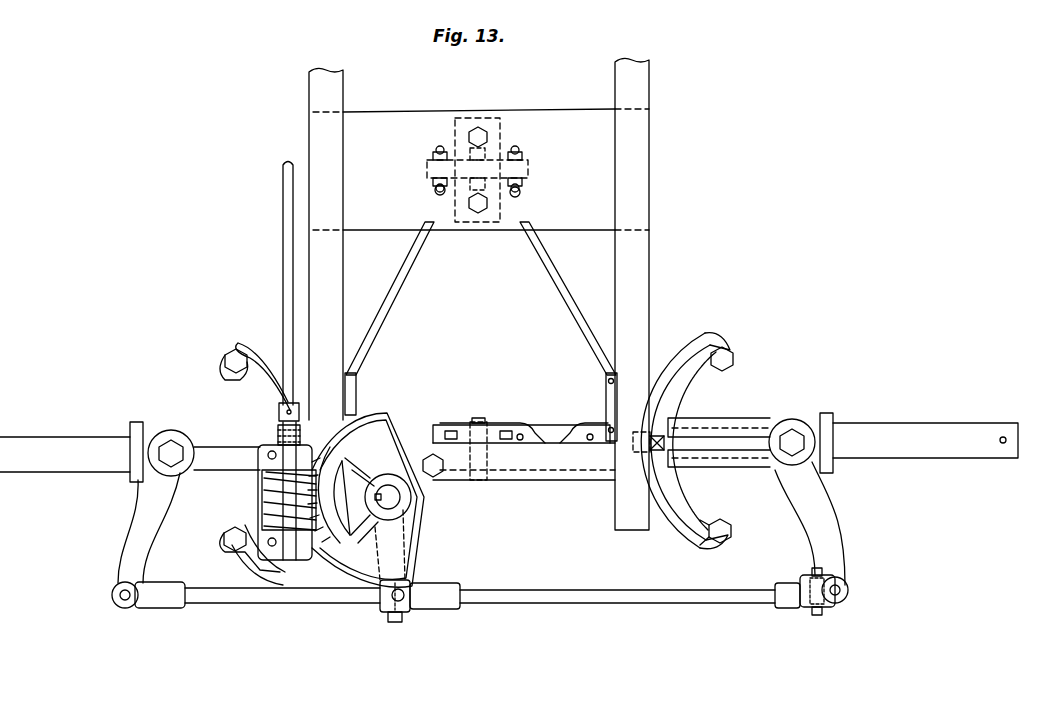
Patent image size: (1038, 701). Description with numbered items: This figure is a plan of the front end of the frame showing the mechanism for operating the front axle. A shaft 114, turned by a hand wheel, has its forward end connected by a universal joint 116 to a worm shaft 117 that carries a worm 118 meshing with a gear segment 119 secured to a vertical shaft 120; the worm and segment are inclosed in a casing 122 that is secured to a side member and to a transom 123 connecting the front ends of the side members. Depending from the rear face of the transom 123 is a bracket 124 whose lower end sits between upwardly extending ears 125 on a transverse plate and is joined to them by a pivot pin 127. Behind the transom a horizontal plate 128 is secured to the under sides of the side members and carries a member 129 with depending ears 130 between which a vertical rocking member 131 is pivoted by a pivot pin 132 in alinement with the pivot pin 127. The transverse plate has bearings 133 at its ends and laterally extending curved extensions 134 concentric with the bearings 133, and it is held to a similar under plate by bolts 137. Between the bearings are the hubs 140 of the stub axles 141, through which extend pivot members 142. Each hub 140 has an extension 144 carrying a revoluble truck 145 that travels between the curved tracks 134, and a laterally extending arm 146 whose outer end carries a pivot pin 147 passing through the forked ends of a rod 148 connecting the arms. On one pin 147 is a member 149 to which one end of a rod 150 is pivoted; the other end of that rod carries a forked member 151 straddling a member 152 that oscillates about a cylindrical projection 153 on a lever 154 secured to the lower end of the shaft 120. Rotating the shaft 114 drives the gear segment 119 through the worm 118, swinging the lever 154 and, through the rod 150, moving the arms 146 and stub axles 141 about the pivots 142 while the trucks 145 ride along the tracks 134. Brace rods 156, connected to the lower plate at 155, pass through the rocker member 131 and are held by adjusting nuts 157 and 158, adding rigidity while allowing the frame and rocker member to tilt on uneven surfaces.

The shaft 114 is at (282, 232).
The universal joint 116 is at (278, 408).
The worm shaft 117 is at (277, 438).
The worm 118 is at (263, 500).
The gear segment 119 is at (380, 474).
The vertical shaft 120 is at (392, 500).
The casing 122 is at (414, 553).
The transom 123 is at (578, 462).
The bracket 124 is at (535, 425).
The ears 125 is at (450, 430).
The pivot pin 127 is at (476, 418).
The horizontal plate 128 is at (606, 222).
The member 129 is at (492, 233).
The depending ears 130 is at (503, 135).
The rocking member 131 is at (530, 167).
The pivot pin 132 is at (462, 226).
The bearings 133 is at (180, 430).
The curved extensions 134 is at (248, 345).
The bolt 137 is at (232, 355).
The hubs 140 is at (147, 422).
The stub axles 141 is at (35, 438).
The pivot members 142 is at (170, 447).
The extension 144 is at (737, 425).
The revoluble truck 145 is at (690, 470).
The arm 146 is at (148, 548).
The pivot pin 147 is at (115, 600).
The rod 148 is at (275, 604).
The member 149 is at (816, 600).
The rod 150 is at (560, 604).
The forked member 151 is at (430, 609).
The member 152 is at (380, 600).
The cylindrical projection 153 is at (392, 623).
The lever 154 is at (362, 540).
The connection point 155 is at (358, 395).
The brace rods 156 is at (383, 315).
The adjusting nut 157 is at (432, 156).
The adjusting nut 158 is at (434, 188).